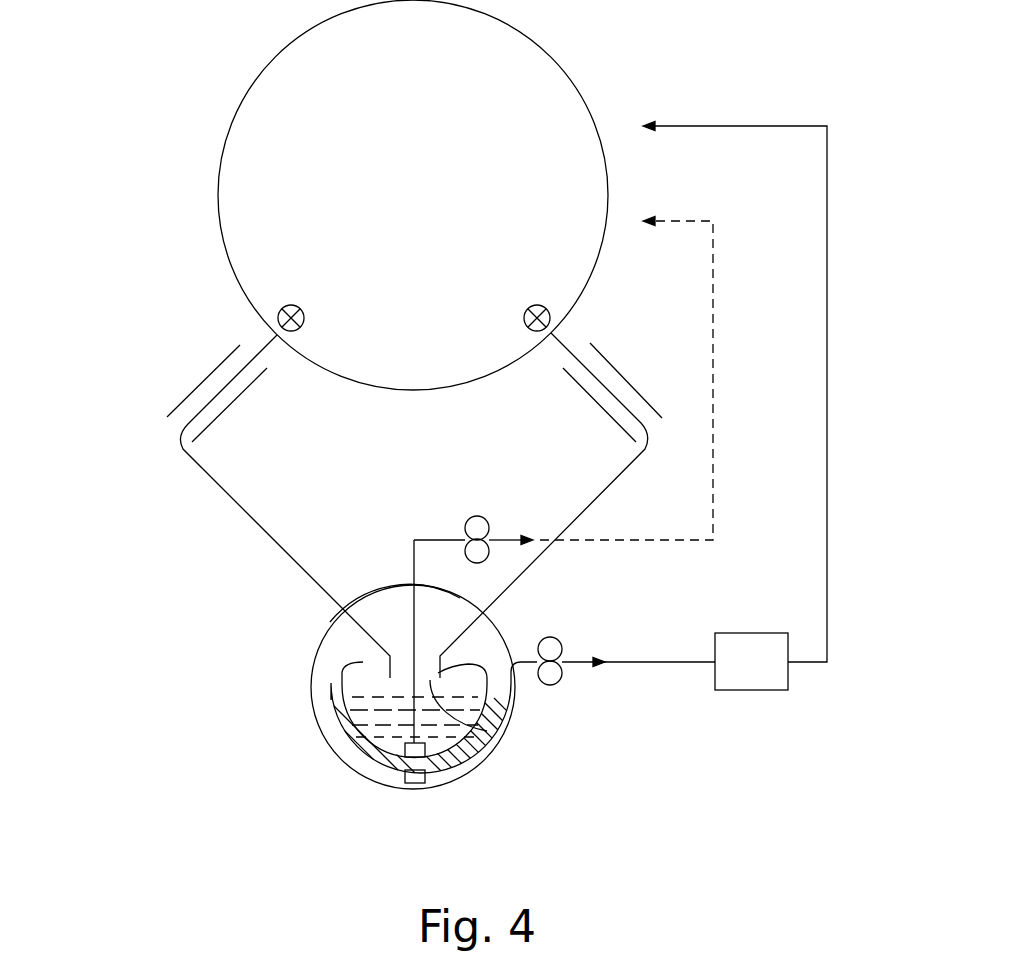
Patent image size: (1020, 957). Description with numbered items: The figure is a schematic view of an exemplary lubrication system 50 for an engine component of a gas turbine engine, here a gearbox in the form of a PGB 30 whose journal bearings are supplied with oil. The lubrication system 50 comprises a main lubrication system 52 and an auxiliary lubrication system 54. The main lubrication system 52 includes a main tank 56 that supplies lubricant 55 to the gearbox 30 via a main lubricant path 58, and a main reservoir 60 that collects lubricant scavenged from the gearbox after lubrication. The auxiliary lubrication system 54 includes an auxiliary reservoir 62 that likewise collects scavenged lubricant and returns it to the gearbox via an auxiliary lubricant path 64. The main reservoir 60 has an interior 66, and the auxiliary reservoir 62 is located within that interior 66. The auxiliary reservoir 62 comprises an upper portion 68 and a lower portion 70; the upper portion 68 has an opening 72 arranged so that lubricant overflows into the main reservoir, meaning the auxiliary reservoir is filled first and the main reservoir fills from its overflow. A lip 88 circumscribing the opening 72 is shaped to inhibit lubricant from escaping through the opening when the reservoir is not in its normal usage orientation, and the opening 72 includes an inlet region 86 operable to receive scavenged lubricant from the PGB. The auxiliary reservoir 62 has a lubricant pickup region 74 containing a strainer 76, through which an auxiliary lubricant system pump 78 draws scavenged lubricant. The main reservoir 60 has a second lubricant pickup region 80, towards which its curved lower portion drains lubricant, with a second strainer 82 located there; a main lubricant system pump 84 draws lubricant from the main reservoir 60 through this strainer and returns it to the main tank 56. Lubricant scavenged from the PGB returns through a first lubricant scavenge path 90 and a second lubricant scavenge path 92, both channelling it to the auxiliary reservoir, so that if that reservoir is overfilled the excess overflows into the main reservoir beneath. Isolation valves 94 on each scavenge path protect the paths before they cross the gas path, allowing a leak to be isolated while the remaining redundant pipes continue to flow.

The PGB 30 is at (427, 208).
The lubrication system 50 is at (787, 70).
The main lubrication system 52 is at (638, 687).
The auxiliary lubrication system 54 is at (404, 532).
The lubricant 55 is at (463, 753).
The main tank 56 is at (750, 692).
The main lubricant path 58 is at (827, 445).
The main reservoir 60 is at (523, 728).
The auxiliary reservoir 62 is at (332, 683).
The auxiliary lubricant path 64 is at (713, 378).
The interior 66 is at (382, 600).
The upper portion 68 is at (340, 670).
The lower portion 70 is at (352, 722).
The opening 72 is at (463, 660).
The lubricant pickup region 74 is at (350, 748).
The strainer 76 is at (398, 778).
The auxiliary lubricant system pump 78 is at (488, 518).
The second lubricant pickup region 80 is at (395, 788).
The second strainer 82 is at (420, 786).
The main lubricant system pump 84 is at (563, 647).
The inlet region 86 is at (465, 723).
The lip 88 is at (363, 662).
The first lubricant scavenge path 90 is at (165, 443).
The second lubricant scavenge path 92 is at (641, 366).
The isolation valves 94 is at (280, 313).